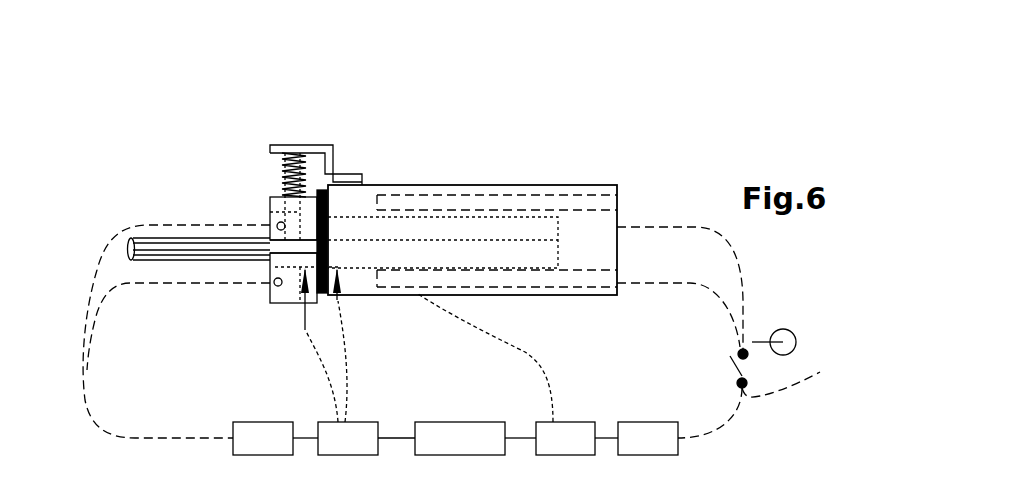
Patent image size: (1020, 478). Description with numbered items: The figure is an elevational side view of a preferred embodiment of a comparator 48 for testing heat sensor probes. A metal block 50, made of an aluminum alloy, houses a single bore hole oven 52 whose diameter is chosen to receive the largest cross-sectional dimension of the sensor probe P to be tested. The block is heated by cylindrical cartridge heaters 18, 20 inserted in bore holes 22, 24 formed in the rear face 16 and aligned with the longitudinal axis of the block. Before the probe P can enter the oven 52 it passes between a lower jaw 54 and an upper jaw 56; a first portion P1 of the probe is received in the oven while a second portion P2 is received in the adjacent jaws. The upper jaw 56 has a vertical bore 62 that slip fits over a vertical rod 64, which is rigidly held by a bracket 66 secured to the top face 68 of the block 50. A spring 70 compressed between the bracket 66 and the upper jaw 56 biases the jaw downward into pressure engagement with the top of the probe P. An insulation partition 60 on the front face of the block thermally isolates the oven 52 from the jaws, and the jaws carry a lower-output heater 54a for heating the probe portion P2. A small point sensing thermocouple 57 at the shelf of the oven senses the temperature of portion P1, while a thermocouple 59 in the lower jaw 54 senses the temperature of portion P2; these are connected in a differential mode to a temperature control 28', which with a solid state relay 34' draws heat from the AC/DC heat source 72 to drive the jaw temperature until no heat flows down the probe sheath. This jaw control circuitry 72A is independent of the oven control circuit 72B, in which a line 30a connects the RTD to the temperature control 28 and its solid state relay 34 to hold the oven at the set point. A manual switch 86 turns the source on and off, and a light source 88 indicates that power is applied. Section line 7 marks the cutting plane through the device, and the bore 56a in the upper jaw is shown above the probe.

The rear face 16 is at (617, 250).
The cartridge heater 18 is at (565, 195).
The cartridge heater 20 is at (535, 280).
The bore hole 22 is at (405, 196).
The bore hole 24 is at (470, 296).
The temperature control 28 is at (577, 418).
The temperature control 28' is at (360, 378).
The line 30a is at (482, 333).
The solid state relay 34 is at (652, 415).
The solid state relay 34' is at (275, 413).
The comparator 48 is at (426, 92).
The metal block 50 is at (535, 178).
The oven 52 is at (558, 238).
The lower jaw 54 is at (270, 296).
The heater 54a is at (270, 272).
The upper jaw 56 is at (270, 197).
The upper block bore 56a is at (270, 222).
The thermocouple 57 is at (345, 300).
The thermocouple 59 is at (296, 303).
The insulation partition 60 is at (326, 300).
The vertical bore 62 is at (270, 208).
The vertical rod 64 is at (272, 173).
The bracket 66 is at (293, 143).
The top face 68 is at (440, 186).
The spring 70 is at (287, 168).
The AC/DC heat source 72 is at (467, 412).
The jaw control circuitry 72A is at (108, 420).
The oven control circuit 72B is at (744, 332).
The manual switch 86 is at (738, 376).
The light source 88 is at (783, 329).
The section line 7 is at (328, 128).
The sensor probe P is at (108, 251).
The first portion of the probe P1 is at (420, 294).
The second portion of the probe P2 is at (176, 255).